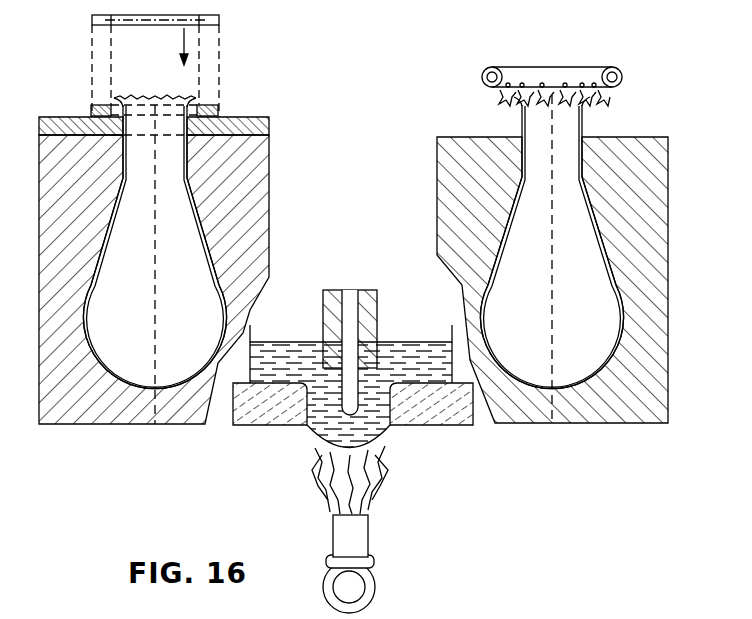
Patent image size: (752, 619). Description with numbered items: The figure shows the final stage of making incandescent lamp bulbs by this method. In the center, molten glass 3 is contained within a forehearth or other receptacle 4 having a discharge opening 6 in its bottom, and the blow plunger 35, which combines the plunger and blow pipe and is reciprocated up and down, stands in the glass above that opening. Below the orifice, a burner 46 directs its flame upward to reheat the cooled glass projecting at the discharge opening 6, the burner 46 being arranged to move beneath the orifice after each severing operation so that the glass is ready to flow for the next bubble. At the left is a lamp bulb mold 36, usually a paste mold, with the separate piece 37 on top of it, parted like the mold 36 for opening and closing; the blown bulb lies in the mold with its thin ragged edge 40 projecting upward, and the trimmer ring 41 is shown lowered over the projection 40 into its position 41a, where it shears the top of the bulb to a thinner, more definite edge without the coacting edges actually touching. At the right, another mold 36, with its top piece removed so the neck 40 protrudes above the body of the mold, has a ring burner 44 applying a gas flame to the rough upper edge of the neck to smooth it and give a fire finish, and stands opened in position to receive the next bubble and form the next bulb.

The molten glass 3 is at (410, 351).
The forehearth 4 is at (445, 415).
The discharge opening 6 is at (306, 428).
The blow plunger 35 is at (372, 313).
The lamp bulb mold 36 is at (255, 213).
The separate piece 37 is at (64, 127).
The ragged edge 40 is at (132, 105).
The ring 41 is at (219, 20).
The ring position 41a is at (218, 110).
The ring burner 44 is at (551, 73).
The burner 46 is at (360, 535).